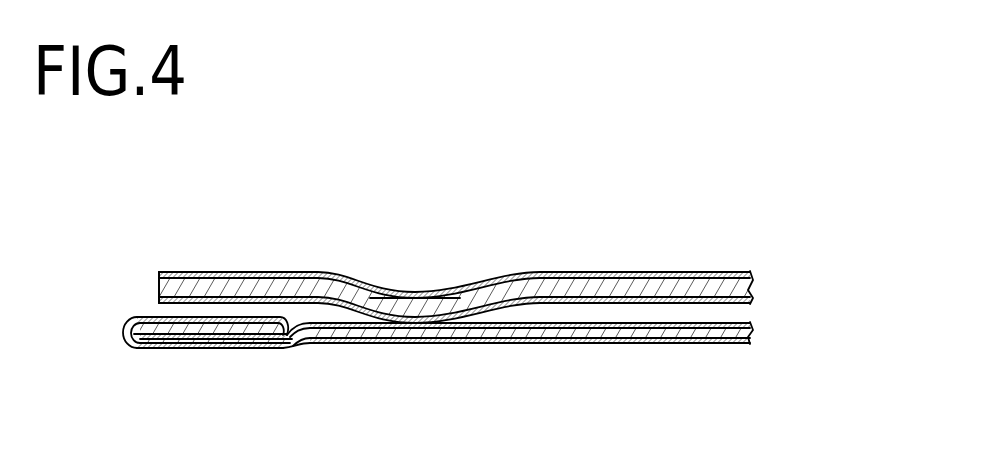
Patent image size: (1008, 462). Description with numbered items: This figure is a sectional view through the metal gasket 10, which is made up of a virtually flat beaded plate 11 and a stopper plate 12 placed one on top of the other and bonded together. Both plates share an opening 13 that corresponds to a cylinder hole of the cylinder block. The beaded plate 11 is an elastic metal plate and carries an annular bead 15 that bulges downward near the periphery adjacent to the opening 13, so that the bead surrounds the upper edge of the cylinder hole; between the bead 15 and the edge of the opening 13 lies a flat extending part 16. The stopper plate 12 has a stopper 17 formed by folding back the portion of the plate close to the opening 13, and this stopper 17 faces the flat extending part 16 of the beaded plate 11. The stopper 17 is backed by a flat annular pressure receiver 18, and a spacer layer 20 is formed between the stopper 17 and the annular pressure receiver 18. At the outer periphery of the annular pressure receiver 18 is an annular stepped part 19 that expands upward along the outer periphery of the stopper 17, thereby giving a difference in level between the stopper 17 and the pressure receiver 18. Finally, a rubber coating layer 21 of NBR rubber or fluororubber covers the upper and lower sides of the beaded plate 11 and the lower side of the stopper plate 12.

The metal gasket 10 is at (650, 260).
The beaded plate 11 is at (750, 290).
The stopper plate 12 is at (748, 325).
The opening 13 is at (123, 333).
The annular bead 15 is at (413, 305).
The flat extending part 16 is at (246, 286).
The stopper 17 is at (188, 322).
The annular pressure receiver 18 is at (153, 350).
The annular stepped part 19 is at (300, 348).
The spacer layer 20 is at (217, 343).
The rubber coating layer 21 is at (582, 272).